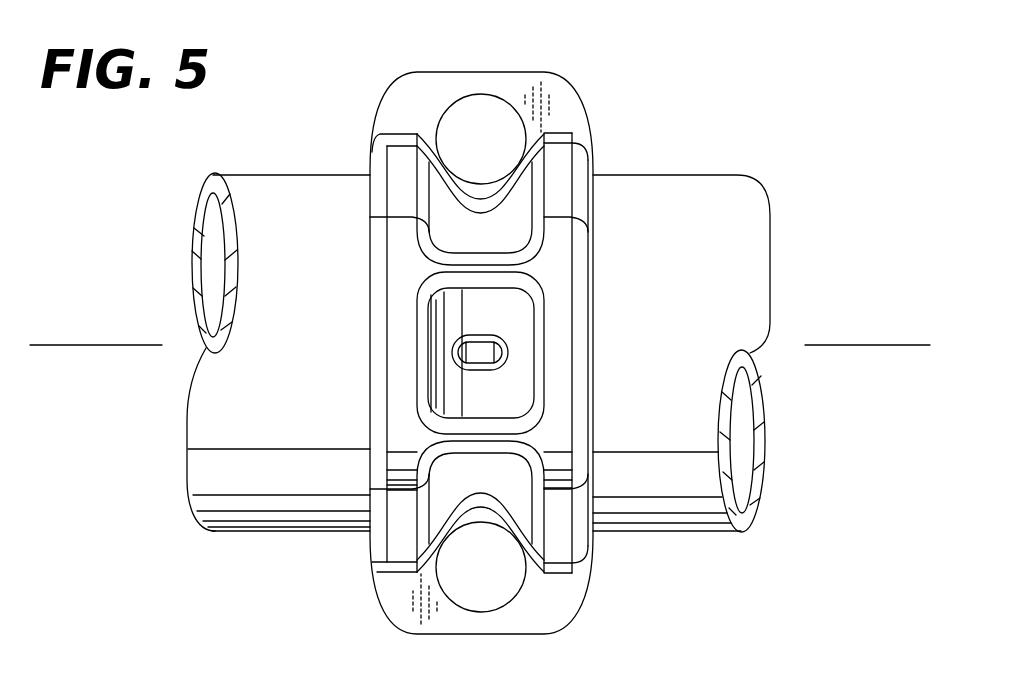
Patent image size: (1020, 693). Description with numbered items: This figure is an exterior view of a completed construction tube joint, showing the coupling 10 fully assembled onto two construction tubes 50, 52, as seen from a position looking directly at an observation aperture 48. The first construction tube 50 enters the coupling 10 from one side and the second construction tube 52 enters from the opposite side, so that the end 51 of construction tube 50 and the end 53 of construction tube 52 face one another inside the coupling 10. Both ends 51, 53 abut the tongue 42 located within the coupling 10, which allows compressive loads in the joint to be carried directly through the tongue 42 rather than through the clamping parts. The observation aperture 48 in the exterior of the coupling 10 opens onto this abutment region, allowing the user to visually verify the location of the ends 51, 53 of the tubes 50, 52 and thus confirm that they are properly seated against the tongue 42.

The coupling 10 is at (657, 140).
The tongue 42 is at (480, 358).
The observation aperture 48 is at (480, 358).
The construction tube 50 is at (216, 408).
The end 51 is at (452, 352).
The construction tube 52 is at (740, 401).
The end 53 is at (508, 354).